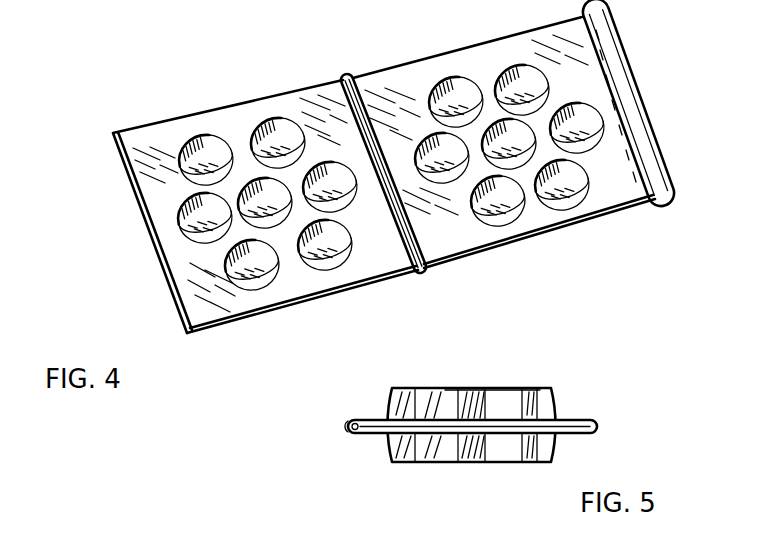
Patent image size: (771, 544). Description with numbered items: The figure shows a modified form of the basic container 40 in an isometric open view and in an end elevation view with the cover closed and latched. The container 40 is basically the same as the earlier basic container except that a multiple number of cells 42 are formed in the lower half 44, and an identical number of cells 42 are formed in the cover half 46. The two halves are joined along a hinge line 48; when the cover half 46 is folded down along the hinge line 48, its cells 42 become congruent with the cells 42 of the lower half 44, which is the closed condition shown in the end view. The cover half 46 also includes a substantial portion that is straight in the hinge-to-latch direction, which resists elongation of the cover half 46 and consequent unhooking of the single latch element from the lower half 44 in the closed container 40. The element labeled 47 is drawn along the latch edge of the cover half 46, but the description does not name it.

In FIG. 4, the container 40 is at (177, 312).
In FIG. 4, the cells 42 is at (437, 88).
In FIG. 4, the lower half 44 is at (140, 173).
In FIG. 5, the lower half 44 is at (435, 458).
In FIG. 4, the cover half 46 is at (570, 220).
In FIG. 5, the cover half 46 is at (457, 390).
In FIG. 4, the rod / pin head 47 is at (658, 145).
In FIG. 5, the rod / pin head 47 is at (347, 427).
In FIG. 4, the hinge line 48 is at (330, 83).
In FIG. 5, the hinge line 48 is at (600, 427).